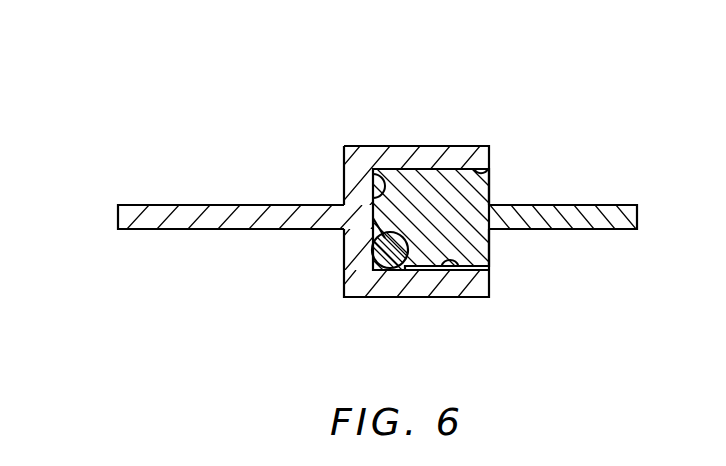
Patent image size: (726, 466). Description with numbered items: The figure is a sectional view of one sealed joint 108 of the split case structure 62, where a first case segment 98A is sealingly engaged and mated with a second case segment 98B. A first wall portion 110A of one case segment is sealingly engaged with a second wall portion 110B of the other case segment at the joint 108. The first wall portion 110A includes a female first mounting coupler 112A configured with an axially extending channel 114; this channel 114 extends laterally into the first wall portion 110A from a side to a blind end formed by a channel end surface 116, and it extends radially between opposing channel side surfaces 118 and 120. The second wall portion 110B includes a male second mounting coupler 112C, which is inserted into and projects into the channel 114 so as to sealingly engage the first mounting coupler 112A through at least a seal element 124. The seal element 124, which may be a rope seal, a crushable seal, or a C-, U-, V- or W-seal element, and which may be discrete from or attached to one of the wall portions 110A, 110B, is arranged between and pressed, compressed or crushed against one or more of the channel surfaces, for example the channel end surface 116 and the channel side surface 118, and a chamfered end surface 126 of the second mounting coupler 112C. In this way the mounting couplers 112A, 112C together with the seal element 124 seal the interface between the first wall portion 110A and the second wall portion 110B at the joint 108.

The split case structure 62 is at (421, 194).
The joint 108 is at (427, 134).
The first mounting coupler 112A is at (366, 146).
The second mounting coupler 112C is at (415, 270).
The first case segment 98A is at (160, 245).
The second case segment 98B is at (623, 245).
The first wall portion 110A is at (200, 205).
The second wall portion 110B is at (627, 205).
The channel 114 is at (473, 268).
The channel end surface 116 is at (375, 178).
The channel side surface 120 is at (490, 183).
The channel side surface 118 is at (443, 270).
The seal element 124 is at (371, 250).
The chamfered end surface 126 is at (377, 228).